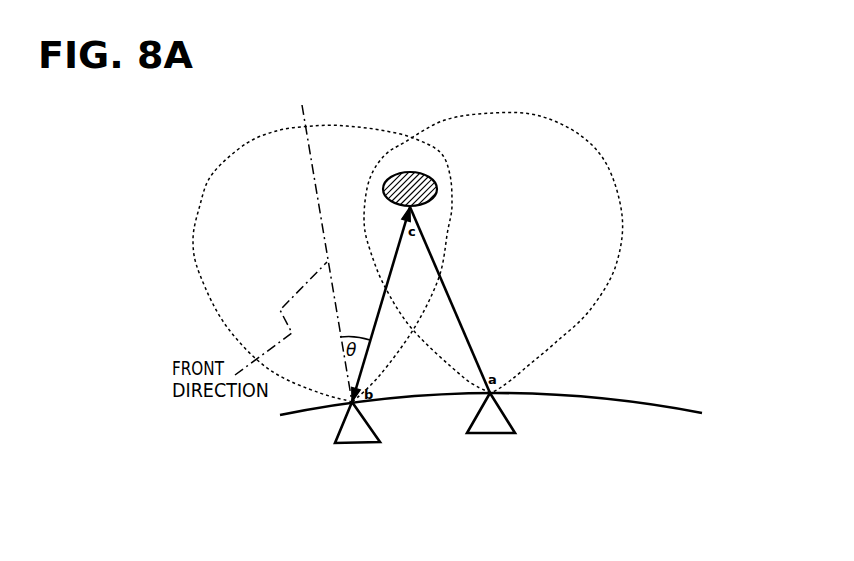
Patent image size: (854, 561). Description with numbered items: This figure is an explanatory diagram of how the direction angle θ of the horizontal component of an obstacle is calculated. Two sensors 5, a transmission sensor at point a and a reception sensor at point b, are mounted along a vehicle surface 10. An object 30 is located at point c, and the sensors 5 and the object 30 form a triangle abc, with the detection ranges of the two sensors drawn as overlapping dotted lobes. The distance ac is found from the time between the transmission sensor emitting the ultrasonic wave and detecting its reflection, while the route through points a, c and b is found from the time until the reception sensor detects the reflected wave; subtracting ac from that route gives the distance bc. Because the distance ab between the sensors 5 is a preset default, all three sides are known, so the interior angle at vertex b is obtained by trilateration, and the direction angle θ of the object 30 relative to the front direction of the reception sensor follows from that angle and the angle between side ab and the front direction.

The ultrasonic sensor (reception sensor / transmission sensor) 5 is at (345, 443).
The vehicle body surface (bumper) 10 is at (655, 405).
The object 30 is at (436, 190).